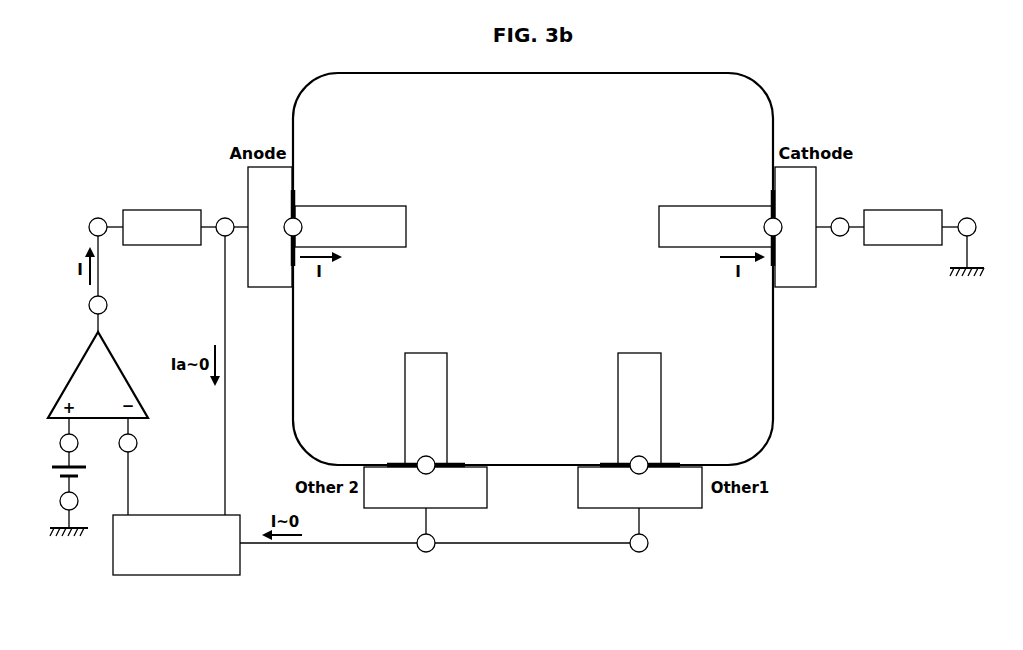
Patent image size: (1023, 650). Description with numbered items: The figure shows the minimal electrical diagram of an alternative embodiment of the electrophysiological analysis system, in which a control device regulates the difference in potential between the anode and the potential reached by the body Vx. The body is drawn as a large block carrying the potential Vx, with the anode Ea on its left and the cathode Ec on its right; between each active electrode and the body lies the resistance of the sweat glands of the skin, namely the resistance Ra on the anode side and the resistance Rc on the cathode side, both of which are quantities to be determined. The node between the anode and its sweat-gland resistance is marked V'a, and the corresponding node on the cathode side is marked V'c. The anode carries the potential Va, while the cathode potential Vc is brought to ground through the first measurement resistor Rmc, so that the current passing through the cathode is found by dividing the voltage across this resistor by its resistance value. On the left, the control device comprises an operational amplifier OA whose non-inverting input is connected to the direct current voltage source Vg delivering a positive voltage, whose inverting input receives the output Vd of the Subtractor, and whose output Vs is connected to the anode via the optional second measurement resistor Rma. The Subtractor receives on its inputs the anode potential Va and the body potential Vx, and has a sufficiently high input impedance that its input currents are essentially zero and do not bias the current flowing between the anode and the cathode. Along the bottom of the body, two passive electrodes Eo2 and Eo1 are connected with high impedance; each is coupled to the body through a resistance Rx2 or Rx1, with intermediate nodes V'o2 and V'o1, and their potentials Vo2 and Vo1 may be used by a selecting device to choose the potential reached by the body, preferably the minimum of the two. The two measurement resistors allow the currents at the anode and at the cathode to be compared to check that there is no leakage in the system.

The potential reached by the body Vx is at (533, 269).
The anode Ea is at (270, 227).
The resistance of the sweat glands on the anode side Ra is at (350, 215).
The anode node voltage V'a is at (307, 227).
The second measurement resistor Rma is at (162, 215).
The potential of the anode Va is at (225, 216).
The output of the operational amplifier Vs is at (109, 305).
The operational amplifier OA is at (98, 375).
The direct current voltage source Vg is at (45, 443).
The output of the subtractor Vd is at (140, 443).
The subtractor Subtractor is at (176, 545).
The other electrode 2 resistance Rx2 is at (408, 409).
The other electrode 2 Eo2 is at (425, 487).
The other electrode 2 node voltage V'o2 is at (426, 454).
The potential of electrode connected with high impedance Vo2 is at (426, 558).
The other electrode 1 resistance Rx1 is at (657, 409).
The other electrode 1 Eo1 is at (640, 487).
The other electrode 1 node voltage V'o1 is at (638, 454).
The potential of electrode connected with high impedance Vo1 is at (640, 558).
The resistance of the sweat glands on the cathode side Rc is at (715, 215).
The cathode Ec is at (795, 227).
The cathode node voltage V'c is at (759, 227).
The cathode terminal voltage Vc is at (838, 216).
The first measurement resistor Rmc is at (903, 215).